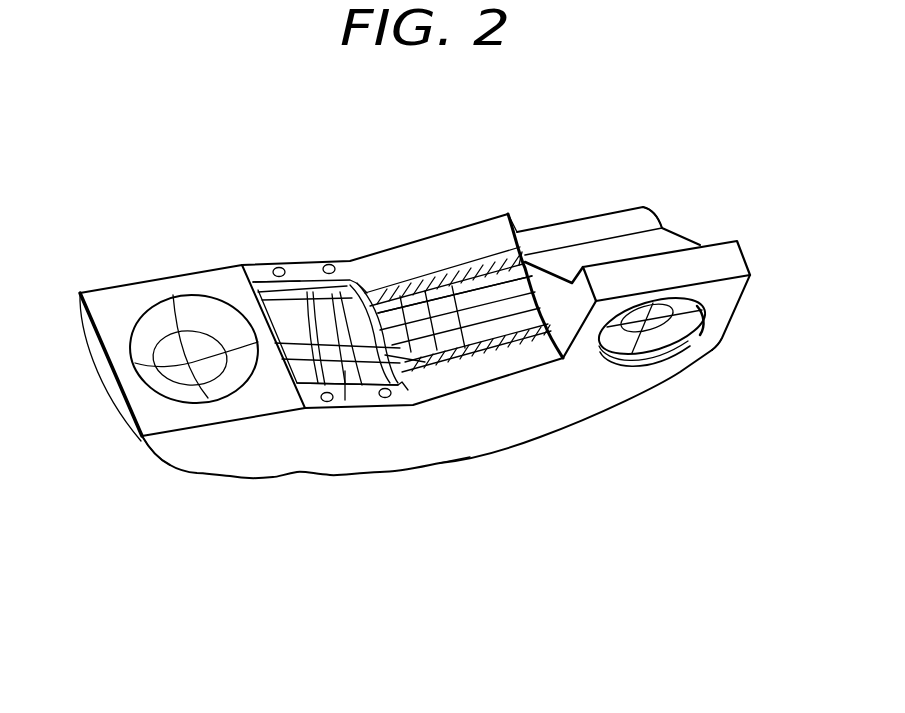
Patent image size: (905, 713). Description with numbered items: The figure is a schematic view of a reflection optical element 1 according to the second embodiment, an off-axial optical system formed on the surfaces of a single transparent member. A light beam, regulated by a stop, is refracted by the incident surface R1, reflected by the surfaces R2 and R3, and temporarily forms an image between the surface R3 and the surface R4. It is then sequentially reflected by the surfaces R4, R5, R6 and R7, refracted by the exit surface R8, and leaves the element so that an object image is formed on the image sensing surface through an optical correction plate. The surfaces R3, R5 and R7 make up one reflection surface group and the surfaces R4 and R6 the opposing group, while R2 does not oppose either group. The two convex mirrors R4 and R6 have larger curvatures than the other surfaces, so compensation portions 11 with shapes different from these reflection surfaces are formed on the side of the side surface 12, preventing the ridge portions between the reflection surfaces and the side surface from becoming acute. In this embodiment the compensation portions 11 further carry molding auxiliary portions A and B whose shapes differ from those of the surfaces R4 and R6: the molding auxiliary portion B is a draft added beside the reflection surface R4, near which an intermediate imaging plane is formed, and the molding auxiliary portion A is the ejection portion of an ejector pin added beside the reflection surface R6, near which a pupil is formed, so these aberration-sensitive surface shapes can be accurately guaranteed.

The reflection optical element 1 is at (618, 192).
The compensation portions 11 is at (389, 263).
The side surface 12 is at (583, 400).
The molding auxiliary portion (ejection portion of ejector pin) A is at (320, 290).
The molding auxiliary portion (draft) B is at (473, 377).
The incident surface R1 is at (703, 327).
The reflection surface R2 is at (670, 242).
The reflection surface R3 is at (672, 378).
The reflection surface (convex mirror) R4 is at (492, 284).
The reflection surface R5 is at (458, 462).
The reflection surface (convex mirror) R6 is at (280, 306).
The reflection surface R7 is at (178, 468).
The exit surface R8 is at (160, 312).